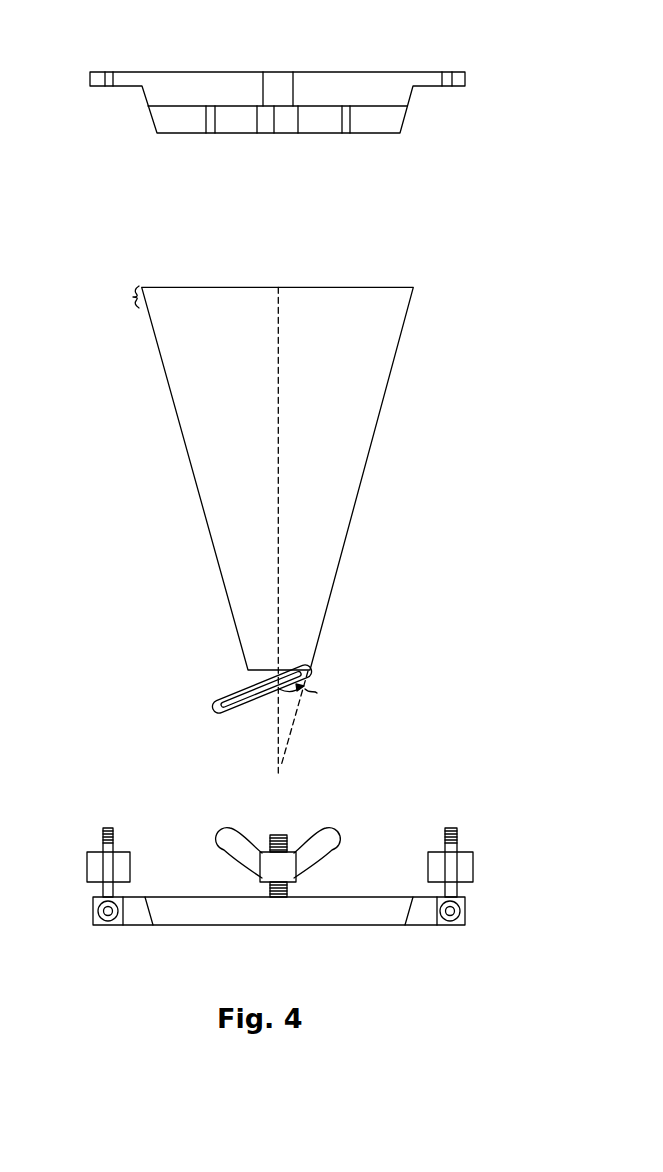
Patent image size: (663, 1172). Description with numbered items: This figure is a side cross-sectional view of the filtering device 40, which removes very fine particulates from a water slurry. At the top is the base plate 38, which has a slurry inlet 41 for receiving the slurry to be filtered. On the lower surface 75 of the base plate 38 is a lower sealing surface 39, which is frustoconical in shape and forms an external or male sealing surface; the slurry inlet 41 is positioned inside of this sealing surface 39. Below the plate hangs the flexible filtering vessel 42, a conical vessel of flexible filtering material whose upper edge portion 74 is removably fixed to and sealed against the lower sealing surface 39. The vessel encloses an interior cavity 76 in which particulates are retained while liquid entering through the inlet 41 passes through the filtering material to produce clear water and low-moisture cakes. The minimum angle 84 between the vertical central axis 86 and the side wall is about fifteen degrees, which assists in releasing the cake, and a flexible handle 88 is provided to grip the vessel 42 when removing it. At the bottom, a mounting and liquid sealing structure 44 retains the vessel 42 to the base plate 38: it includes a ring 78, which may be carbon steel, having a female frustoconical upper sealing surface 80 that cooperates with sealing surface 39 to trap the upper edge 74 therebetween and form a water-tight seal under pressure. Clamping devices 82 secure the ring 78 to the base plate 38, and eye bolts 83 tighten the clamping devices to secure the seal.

The base plate 38 is at (343, 80).
The lower sealing surface 39 is at (410, 98).
The slurry inlet 41 is at (277, 80).
The lower surface 75 is at (289, 93).
The filtering device 40 is at (312, 507).
The flexible filtering vessel 42 is at (402, 332).
The upper edge portion 74 is at (134, 298).
The interior cavity 76 is at (215, 429).
The vertical central axis 86 is at (290, 329).
The minimum angle 84 is at (333, 693).
The flexible handle 88 is at (224, 688).
The mounting and liquid sealing structure 44 is at (302, 904).
The ring 78 is at (425, 913).
The upper sealing surface 80 is at (410, 917).
The clamping devices 82 is at (86, 863).
The eye bolts 83 is at (452, 848).